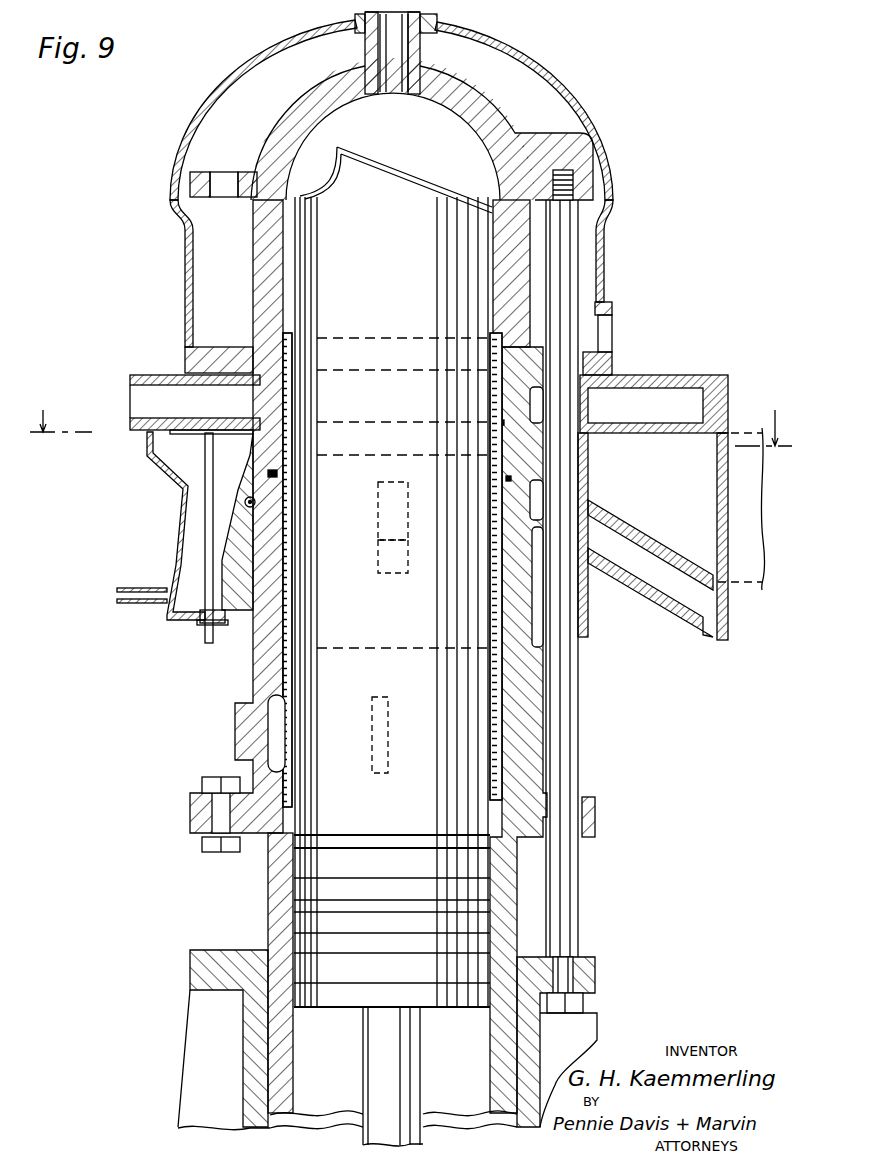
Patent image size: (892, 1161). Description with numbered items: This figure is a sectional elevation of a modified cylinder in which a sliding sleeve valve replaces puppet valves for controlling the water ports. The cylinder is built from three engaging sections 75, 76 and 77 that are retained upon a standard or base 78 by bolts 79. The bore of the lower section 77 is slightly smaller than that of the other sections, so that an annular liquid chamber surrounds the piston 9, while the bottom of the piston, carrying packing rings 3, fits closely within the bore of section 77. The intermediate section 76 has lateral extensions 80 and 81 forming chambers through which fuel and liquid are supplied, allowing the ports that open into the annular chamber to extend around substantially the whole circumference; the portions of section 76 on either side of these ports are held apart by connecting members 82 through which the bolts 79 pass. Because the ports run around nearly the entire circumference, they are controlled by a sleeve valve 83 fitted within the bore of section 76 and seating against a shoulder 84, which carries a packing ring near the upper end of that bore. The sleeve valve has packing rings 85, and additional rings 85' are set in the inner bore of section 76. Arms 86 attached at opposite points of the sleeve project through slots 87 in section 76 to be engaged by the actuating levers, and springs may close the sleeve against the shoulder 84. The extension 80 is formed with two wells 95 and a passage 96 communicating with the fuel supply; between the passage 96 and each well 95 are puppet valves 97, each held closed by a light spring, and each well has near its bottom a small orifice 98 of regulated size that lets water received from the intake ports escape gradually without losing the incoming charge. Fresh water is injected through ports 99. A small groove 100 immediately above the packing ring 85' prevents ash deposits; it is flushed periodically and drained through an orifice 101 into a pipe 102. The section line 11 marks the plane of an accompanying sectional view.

The packing rings 3 is at (376, 943).
The piston 9 is at (430, 290).
The section line 11 is at (411, 414).
The cylinder section 75 is at (548, 138).
The intermediate section 76 is at (268, 675).
The cylinder section 77 is at (280, 886).
The standard or base 78 is at (528, 1033).
The bolts 79 is at (558, 673).
The lateral extension 80 is at (193, 520).
The lateral extension 81 is at (652, 378).
The connecting members 82 is at (585, 472).
The sleeve valve 83 is at (280, 557).
The shoulder 84 is at (288, 420).
The packing rings 85 is at (550, 566).
The additional rings 85' is at (384, 517).
The arms 86 is at (383, 497).
The slots 87 is at (382, 548).
The wells 95 is at (177, 535).
The passage 96 is at (130, 402).
The puppet valves 97 is at (207, 436).
The orifice 98 is at (153, 597).
The ports 99 is at (280, 722).
The groove 100 is at (230, 430).
The orifice 101 is at (273, 483).
The pipe 102 is at (250, 507).